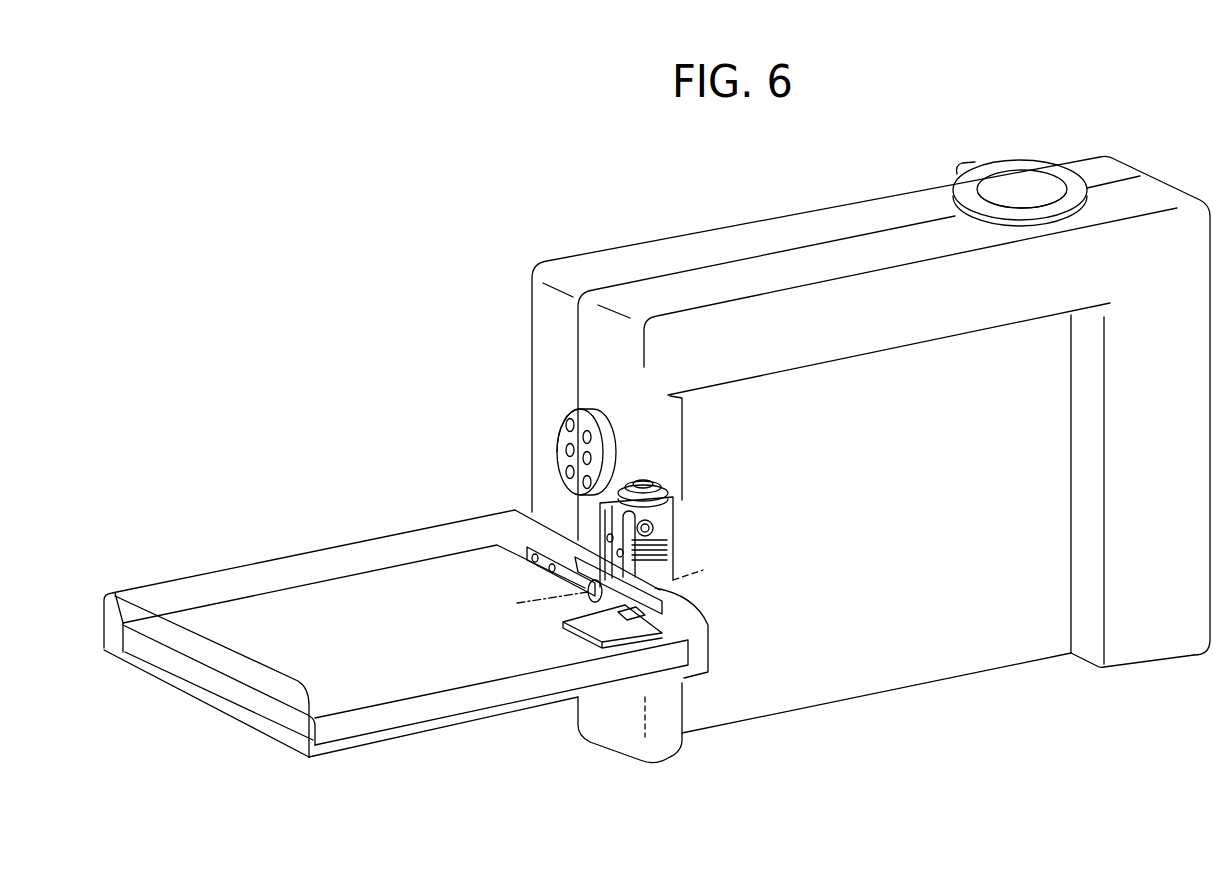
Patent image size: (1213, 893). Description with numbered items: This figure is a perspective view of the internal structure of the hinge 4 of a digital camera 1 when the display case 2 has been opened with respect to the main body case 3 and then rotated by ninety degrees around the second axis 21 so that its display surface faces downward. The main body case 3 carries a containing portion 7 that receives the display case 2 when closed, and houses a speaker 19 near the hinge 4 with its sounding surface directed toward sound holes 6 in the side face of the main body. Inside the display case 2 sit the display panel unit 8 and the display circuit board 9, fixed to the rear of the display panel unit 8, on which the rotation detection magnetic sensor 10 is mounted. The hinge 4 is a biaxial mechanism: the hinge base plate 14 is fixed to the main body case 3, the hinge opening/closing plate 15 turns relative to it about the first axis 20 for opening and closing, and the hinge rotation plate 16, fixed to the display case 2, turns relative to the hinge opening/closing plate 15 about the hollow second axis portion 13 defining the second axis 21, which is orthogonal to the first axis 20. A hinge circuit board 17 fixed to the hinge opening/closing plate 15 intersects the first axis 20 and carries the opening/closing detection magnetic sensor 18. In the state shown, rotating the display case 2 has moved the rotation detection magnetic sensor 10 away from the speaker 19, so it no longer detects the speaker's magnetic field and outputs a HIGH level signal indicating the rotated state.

The digital camera 1 is at (1048, 150).
The display case 2 is at (231, 582).
The main body case 3 is at (1147, 640).
The hinge 4 is at (703, 570).
The sound holes 6 is at (565, 422).
The containing portion 7 is at (951, 665).
The display panel unit 8 is at (392, 692).
The display circuit board 9 is at (673, 543).
The rotation detection magnetic sensor 10 is at (670, 630).
The second axis portion 13 is at (587, 590).
The hinge base plate 14 is at (592, 535).
The hinge opening/closing plate 15 is at (595, 533).
The hinge rotation plate 16 is at (538, 550).
The hinge circuit board 17 is at (657, 478).
The opening/closing detection magnetic sensor 18 is at (640, 478).
The speaker 19 is at (578, 410).
The first axis 20 is at (647, 478).
The second axis 21 is at (533, 603).